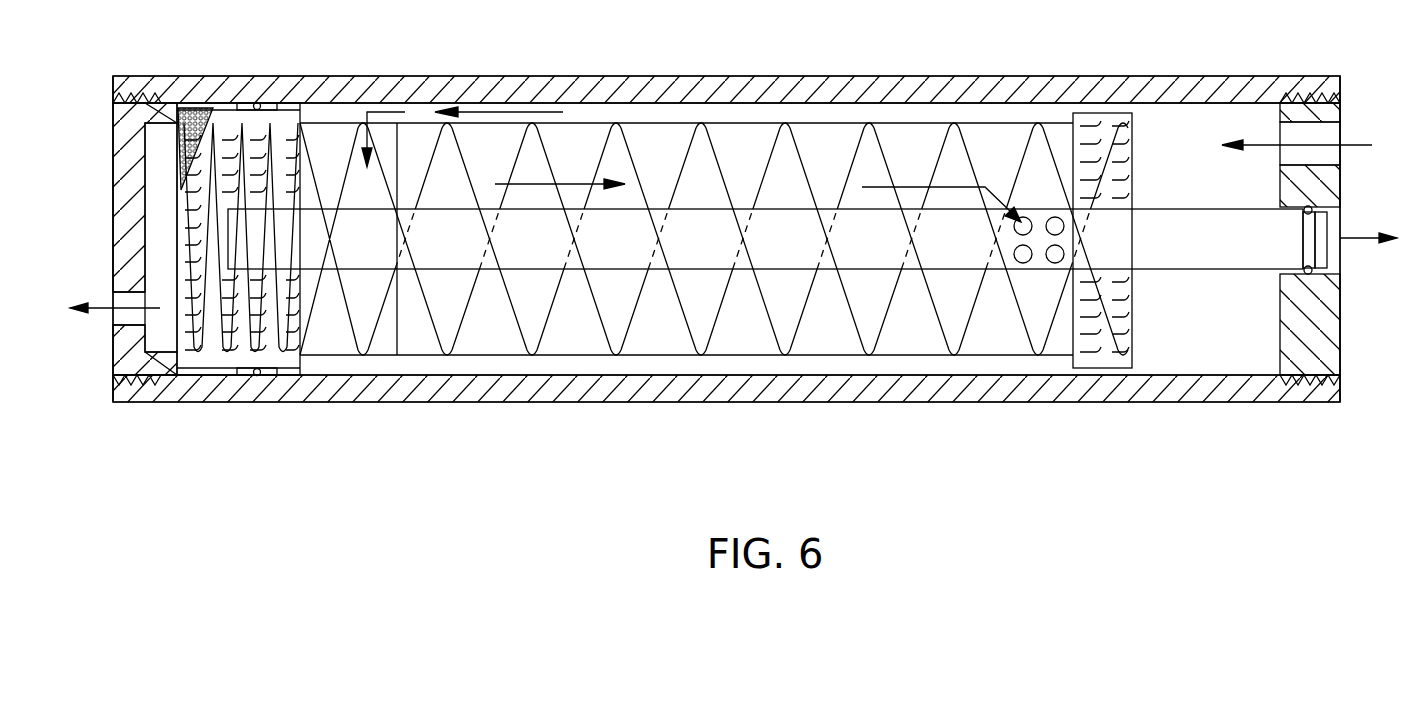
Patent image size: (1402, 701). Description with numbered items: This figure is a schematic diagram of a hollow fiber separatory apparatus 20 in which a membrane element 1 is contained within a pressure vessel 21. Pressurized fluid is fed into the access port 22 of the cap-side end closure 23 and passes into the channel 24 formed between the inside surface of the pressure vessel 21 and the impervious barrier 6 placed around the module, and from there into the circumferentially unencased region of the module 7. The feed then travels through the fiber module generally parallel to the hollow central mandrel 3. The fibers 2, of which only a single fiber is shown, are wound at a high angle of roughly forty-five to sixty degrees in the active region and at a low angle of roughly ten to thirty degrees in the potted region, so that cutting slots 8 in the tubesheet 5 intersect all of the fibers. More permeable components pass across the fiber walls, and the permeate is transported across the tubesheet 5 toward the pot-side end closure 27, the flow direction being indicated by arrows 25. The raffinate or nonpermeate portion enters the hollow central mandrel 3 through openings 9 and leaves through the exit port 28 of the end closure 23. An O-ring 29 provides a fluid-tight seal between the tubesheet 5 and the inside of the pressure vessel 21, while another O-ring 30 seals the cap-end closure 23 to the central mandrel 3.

The membrane element 1 is at (645, 117).
The fibers 2 is at (550, 137).
The central mandrel 3 is at (1175, 209).
The tubesheet 5 is at (240, 125).
The impervious barrier 6 is at (828, 110).
The circumferentially unencased region of the module 7 is at (326, 122).
The cutting slots 8 is at (196, 106).
The openings 9 is at (1027, 214).
The hollow fiber separatory apparatus 20 is at (676, 436).
The pressure vessel 21 is at (900, 402).
The access port 22 is at (1328, 132).
The end closure 23 is at (1328, 318).
The channel 24 is at (950, 117).
The flow arrows 25 is at (497, 142).
The pot-side end closure 27 is at (113, 170).
The exit port 28 is at (113, 315).
The O-ring 29 is at (260, 377).
The O-ring 30 is at (1306, 274).